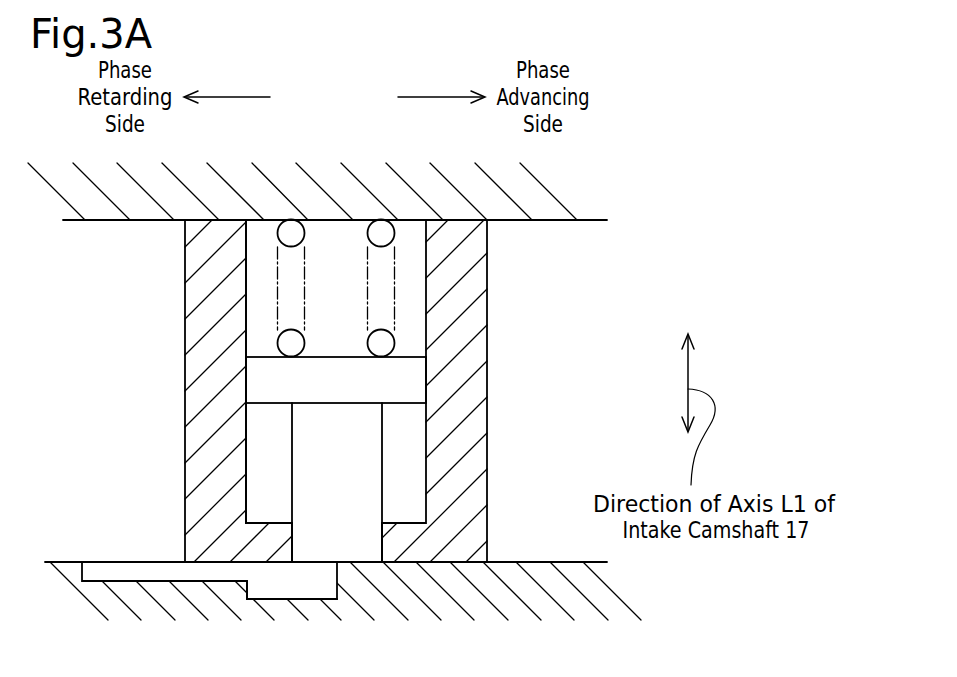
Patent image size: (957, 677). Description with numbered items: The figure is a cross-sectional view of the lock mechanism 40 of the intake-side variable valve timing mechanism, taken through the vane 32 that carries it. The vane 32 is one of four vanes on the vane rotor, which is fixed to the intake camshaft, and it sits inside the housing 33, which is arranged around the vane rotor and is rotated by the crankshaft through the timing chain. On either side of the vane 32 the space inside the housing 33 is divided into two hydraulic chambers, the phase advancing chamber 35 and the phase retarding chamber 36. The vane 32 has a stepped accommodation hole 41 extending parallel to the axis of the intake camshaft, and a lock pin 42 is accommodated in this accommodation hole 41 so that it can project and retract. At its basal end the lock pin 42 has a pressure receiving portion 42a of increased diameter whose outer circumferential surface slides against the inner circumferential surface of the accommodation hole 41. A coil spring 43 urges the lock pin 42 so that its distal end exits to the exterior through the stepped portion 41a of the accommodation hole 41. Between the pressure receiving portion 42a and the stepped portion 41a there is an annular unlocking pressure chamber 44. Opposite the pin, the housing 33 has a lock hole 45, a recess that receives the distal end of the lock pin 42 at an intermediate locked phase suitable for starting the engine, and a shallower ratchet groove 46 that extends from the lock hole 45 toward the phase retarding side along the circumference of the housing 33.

The lock mechanism 40 is at (653, 157).
The vane 32 is at (487, 335).
The housing 33 is at (552, 212).
The phase advancing chamber 35 is at (86, 405).
The phase retarding chamber 36 is at (556, 435).
The accommodation hole 41 is at (246, 290).
The stepped portion 41a is at (372, 553).
The lock pin 42 is at (373, 480).
The pressure receiving portion 42a is at (414, 383).
The coil spring 43 is at (395, 290).
The unlocking pressure chamber 44 is at (247, 471).
The lock hole 45 is at (273, 590).
The ratchet groove 46 is at (122, 569).